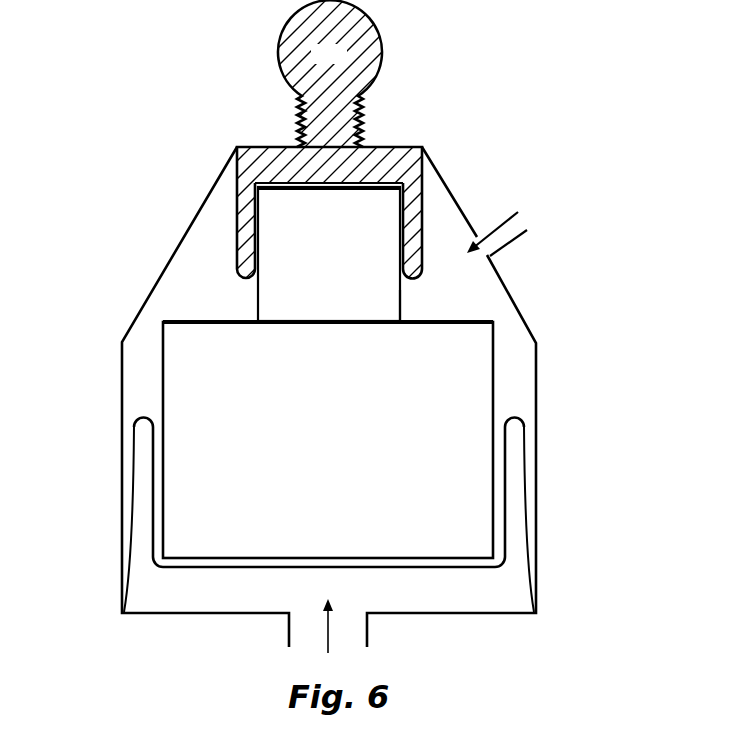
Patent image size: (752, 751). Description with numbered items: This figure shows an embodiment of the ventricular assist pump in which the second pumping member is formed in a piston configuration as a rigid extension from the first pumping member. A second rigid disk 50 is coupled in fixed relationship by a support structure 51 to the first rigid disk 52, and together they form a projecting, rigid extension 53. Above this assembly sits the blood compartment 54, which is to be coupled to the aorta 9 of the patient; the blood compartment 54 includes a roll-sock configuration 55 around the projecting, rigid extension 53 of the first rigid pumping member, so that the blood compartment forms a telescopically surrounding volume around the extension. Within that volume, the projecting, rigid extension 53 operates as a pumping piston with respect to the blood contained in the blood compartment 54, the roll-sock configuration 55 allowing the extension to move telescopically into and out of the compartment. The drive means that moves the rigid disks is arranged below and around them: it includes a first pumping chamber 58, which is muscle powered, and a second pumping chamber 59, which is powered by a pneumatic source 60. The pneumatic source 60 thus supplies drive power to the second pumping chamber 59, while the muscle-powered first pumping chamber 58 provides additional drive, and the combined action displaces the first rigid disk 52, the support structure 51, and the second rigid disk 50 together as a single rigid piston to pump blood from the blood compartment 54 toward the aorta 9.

The aorta 9 is at (370, 47).
The second rigid disk 50 is at (327, 185).
The support structure 51 is at (400, 300).
The first rigid disk 52 is at (466, 322).
The projecting rigid extension 53 is at (250, 304).
The blood compartment 54 is at (373, 160).
The roll-sock configuration 55 is at (238, 228).
The first pumping chamber 58 is at (495, 592).
The second pumping chamber 59 is at (508, 396).
The pneumatic source 60 is at (514, 234).